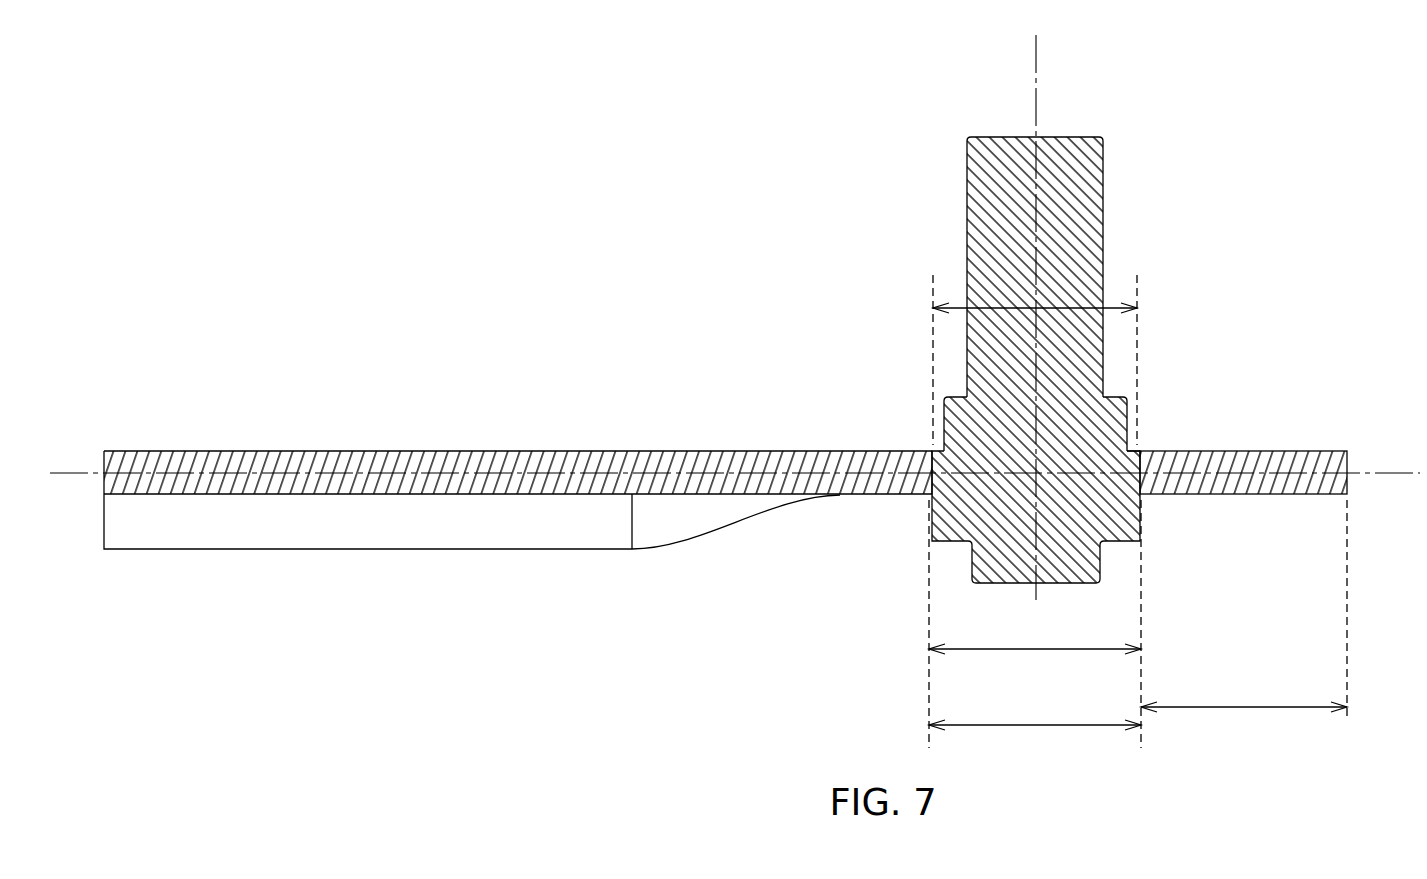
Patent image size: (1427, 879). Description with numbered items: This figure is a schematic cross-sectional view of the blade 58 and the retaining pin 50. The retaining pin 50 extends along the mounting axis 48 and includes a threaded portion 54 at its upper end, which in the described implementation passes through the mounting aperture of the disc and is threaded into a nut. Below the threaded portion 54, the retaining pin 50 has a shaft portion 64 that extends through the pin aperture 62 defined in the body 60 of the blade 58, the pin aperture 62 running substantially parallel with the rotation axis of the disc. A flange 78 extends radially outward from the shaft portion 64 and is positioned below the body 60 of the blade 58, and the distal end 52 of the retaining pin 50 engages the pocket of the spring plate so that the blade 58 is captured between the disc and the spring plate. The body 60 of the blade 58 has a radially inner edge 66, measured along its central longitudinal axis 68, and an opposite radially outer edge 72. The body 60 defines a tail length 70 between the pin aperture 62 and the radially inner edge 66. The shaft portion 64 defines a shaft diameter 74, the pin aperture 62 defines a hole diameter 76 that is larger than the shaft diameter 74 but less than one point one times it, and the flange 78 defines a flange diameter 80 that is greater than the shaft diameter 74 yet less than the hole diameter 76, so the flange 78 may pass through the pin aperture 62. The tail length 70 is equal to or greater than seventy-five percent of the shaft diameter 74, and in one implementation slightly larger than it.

The mounting axis 48 is at (1033, 58).
The retaining pin 50 is at (1080, 358).
The distal end 52 is at (1109, 624).
The threaded portion 54 is at (1103, 177).
The blade 58 is at (492, 438).
The body 60 is at (688, 451).
The pin aperture 62 is at (1127, 451).
The shaft portion 64 is at (1048, 413).
The radially inner edge 66 is at (1348, 488).
The central longitudinal axis 68 is at (1396, 470).
The tail length 70 is at (1240, 708).
The radially outer edge 72 is at (102, 467).
The shaft diameter 74 is at (960, 306).
The hole diameter 76 is at (1020, 726).
The flange 78 is at (1133, 519).
The flange diameter 80 is at (1023, 650).